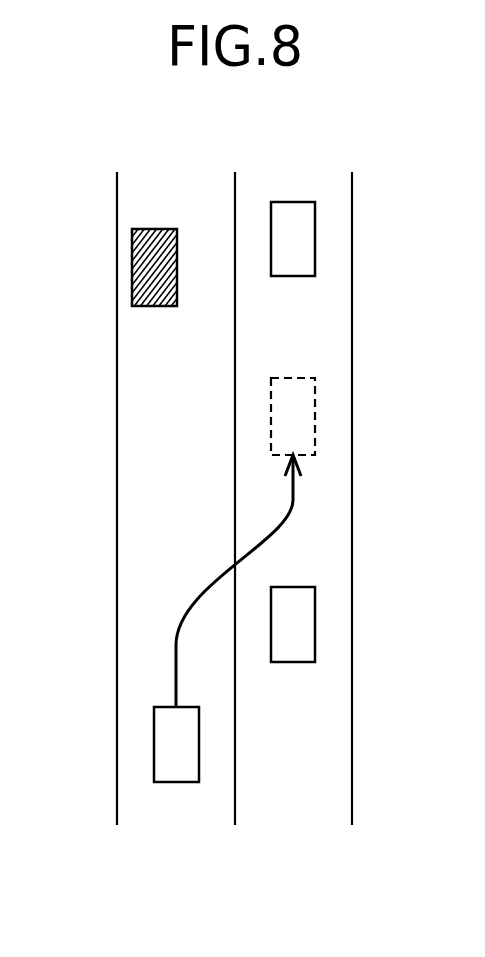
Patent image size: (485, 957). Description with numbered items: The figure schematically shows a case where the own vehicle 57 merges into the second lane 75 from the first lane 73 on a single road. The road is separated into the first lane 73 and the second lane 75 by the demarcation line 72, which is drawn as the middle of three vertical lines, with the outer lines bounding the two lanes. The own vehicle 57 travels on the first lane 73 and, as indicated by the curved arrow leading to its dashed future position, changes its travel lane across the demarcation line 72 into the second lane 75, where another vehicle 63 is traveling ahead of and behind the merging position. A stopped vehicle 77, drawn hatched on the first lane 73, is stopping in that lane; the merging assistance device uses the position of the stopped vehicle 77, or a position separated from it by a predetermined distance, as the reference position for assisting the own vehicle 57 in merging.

The own vehicle 57 is at (293, 378).
The another vehicle 63 is at (295, 202).
The demarcation line 72 is at (235, 215).
The first lane 73 is at (212, 812).
The second lane 75 is at (292, 812).
The stopped vehicle 77 is at (133, 262).